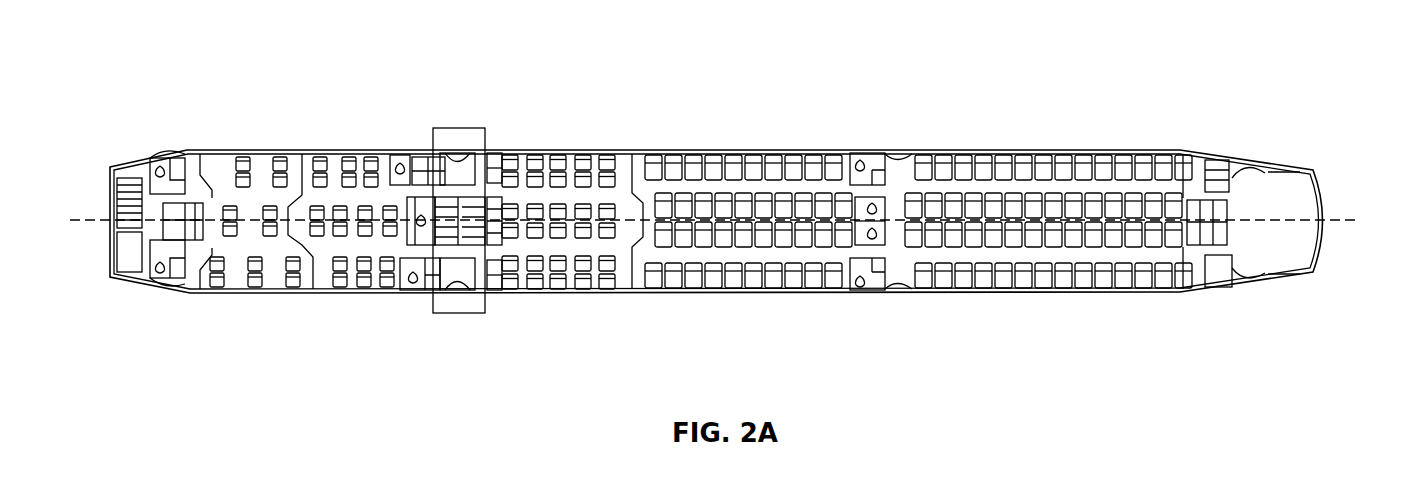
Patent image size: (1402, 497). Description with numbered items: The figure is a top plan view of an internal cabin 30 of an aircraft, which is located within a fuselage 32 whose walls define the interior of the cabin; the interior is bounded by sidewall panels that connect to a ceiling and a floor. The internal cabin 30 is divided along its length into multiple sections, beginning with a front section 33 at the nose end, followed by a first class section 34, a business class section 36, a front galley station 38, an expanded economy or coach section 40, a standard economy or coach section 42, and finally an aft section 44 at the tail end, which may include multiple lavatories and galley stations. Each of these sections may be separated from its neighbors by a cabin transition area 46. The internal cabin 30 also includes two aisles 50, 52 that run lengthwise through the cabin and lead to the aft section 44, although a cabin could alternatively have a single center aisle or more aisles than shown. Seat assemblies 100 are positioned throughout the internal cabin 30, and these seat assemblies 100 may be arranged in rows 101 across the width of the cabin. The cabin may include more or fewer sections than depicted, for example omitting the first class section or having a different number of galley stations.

The internal cabin 30 is at (248, 52).
The fuselage 32 is at (583, 80).
The front section 33 is at (170, 307).
The first class section 34 is at (265, 296).
The business class section 36 is at (338, 149).
The front galley station 38 is at (453, 313).
The expanded economy or coach section 40 is at (560, 296).
The standard economy or coach section 42 is at (760, 209).
The aft section 44 is at (1255, 178).
The cabin transition area 46 is at (185, 149).
The aisle 50 is at (1048, 225).
The aisle 52 is at (1067, 258).
The seat assembly 100 is at (815, 158).
The row 101 is at (808, 140).